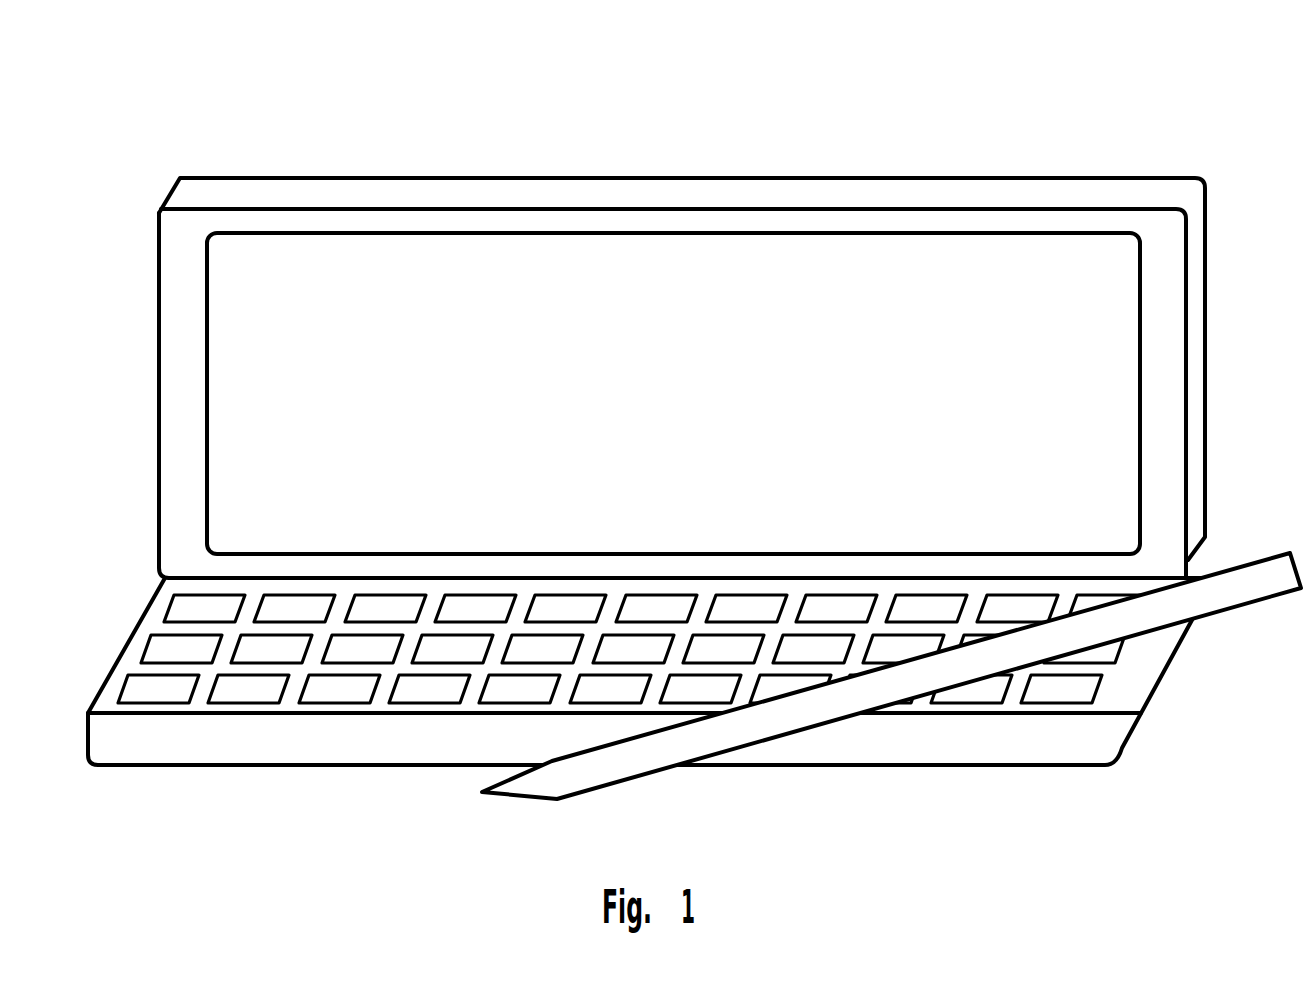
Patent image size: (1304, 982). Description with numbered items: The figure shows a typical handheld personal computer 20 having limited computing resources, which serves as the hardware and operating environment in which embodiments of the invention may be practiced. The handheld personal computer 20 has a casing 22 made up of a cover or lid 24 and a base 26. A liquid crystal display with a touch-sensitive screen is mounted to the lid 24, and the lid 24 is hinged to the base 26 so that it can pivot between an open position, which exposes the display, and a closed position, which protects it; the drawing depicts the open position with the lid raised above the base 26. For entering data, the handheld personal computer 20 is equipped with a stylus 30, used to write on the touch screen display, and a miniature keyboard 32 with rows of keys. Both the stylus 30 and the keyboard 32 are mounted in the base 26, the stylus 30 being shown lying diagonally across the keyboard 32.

The handheld personal computer 20 is at (670, 439).
The casing 22 is at (652, 704).
The lid 24 is at (990, 196).
The base 26 is at (1005, 738).
The stylus 30 is at (640, 750).
The keyboard 32 is at (185, 635).